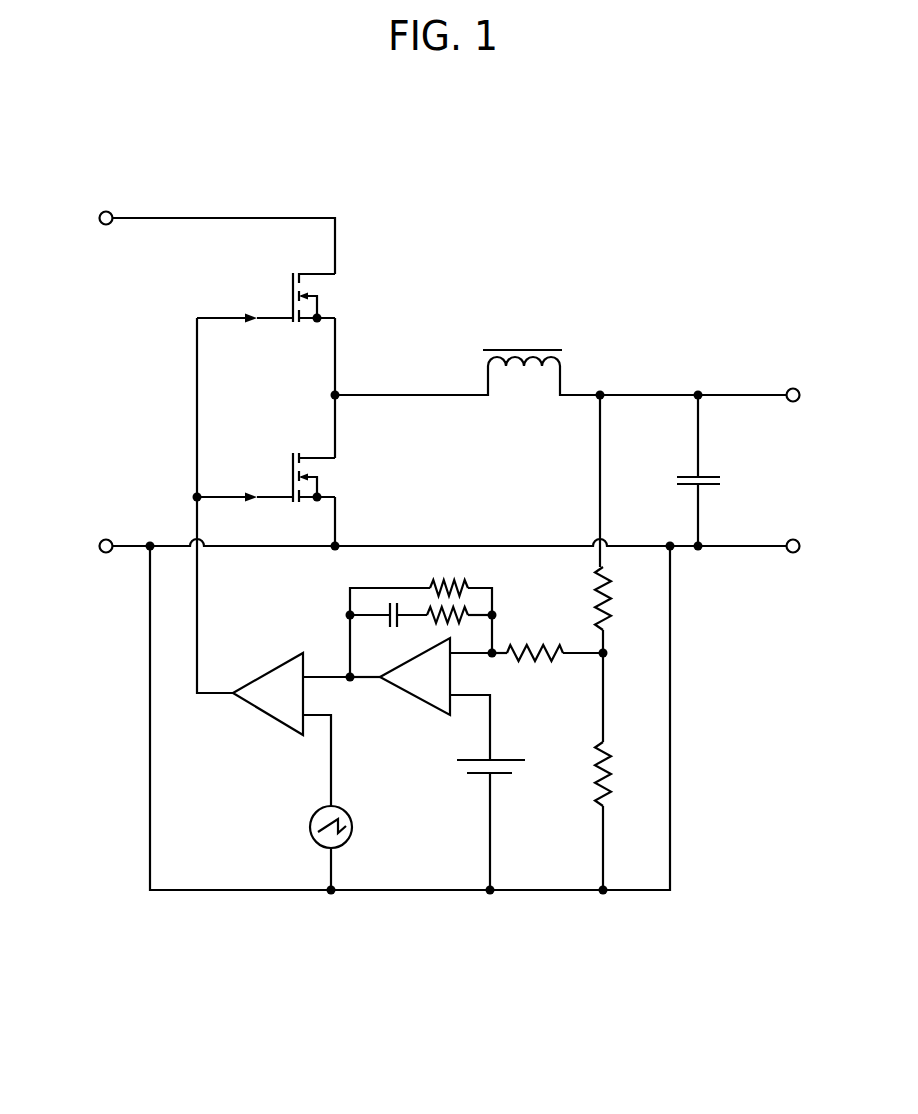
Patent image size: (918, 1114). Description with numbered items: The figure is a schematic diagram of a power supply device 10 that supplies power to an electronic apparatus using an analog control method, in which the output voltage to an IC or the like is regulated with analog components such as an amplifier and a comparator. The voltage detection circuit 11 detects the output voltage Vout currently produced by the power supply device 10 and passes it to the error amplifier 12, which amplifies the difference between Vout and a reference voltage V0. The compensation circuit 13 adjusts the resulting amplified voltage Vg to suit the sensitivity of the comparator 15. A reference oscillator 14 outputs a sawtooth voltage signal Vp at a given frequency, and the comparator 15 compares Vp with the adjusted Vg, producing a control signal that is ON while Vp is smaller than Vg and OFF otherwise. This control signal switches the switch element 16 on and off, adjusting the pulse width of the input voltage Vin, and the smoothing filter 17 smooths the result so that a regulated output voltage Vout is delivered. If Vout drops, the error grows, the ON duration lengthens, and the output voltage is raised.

The power supply device 10 is at (690, 265).
The voltage detection circuit 11 is at (555, 676).
The error amplifier 12 is at (414, 702).
The compensation circuit 13 is at (410, 600).
The reference oscillator 14 is at (316, 808).
The comparator 15 is at (261, 675).
The switch element 16 is at (335, 479).
The smoothing filter 17 is at (687, 462).